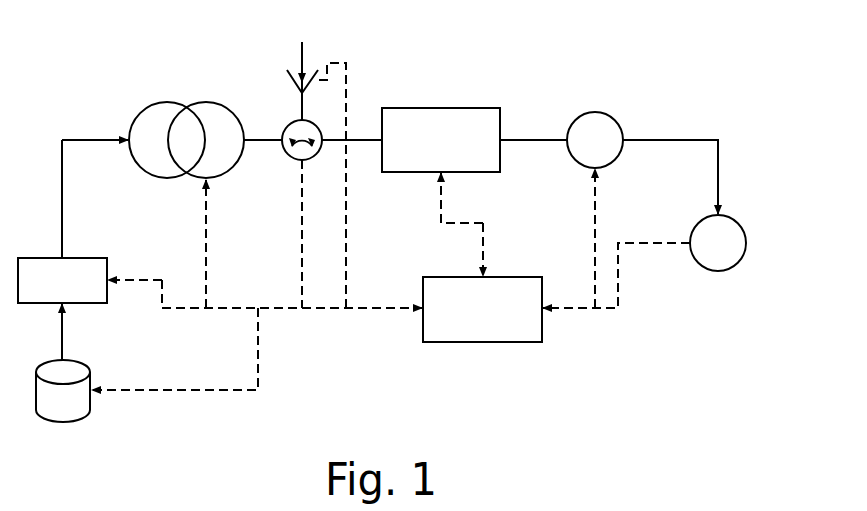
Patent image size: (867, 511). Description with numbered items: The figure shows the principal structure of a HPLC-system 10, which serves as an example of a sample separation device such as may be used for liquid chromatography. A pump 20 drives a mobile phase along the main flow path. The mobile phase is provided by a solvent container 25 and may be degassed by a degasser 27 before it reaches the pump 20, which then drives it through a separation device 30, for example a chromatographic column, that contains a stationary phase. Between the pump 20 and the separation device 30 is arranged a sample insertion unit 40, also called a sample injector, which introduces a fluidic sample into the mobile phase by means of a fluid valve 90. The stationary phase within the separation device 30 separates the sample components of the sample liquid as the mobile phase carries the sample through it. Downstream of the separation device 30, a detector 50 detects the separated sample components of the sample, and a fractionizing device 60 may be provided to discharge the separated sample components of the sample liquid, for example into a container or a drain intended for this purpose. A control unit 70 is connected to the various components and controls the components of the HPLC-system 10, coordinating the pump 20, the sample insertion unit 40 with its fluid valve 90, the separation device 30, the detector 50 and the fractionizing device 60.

The HPLC-system 10 is at (582, 356).
The pump 20 is at (162, 113).
The solvent container 25 is at (72, 422).
The degasser 27 is at (90, 304).
The separation device 30 is at (450, 117).
The sample insertion unit 40 is at (288, 78).
The detector 50 is at (600, 112).
The fractionizing device 60 is at (733, 214).
The control unit 70 is at (490, 343).
The fluid valve 90 is at (291, 158).